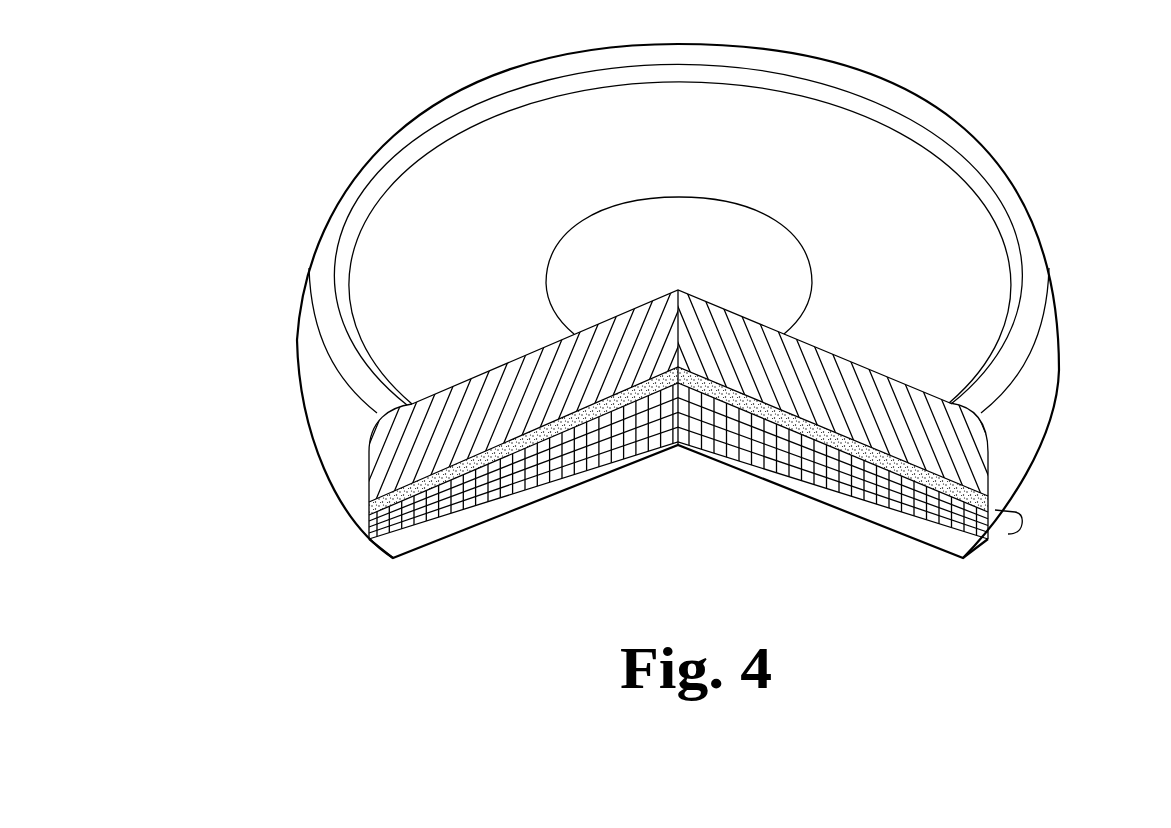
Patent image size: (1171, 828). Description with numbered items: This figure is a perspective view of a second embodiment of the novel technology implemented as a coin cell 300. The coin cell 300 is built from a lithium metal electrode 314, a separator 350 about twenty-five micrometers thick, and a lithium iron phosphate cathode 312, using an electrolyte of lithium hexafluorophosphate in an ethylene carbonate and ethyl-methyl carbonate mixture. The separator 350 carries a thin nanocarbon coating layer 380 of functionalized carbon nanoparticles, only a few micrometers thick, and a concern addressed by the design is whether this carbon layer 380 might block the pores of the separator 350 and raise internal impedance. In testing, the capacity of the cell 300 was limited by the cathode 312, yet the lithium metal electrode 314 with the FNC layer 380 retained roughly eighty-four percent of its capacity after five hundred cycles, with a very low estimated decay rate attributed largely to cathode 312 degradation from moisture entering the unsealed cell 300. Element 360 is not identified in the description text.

The coin cell 300 is at (272, 512).
The LiFePO4 cathode 312 is at (978, 451).
The Li metal electrode 314 is at (929, 533).
The separator 350 is at (853, 440).
The tab 360 is at (1023, 528).
The nanocarbon coating layer 380 is at (968, 552).